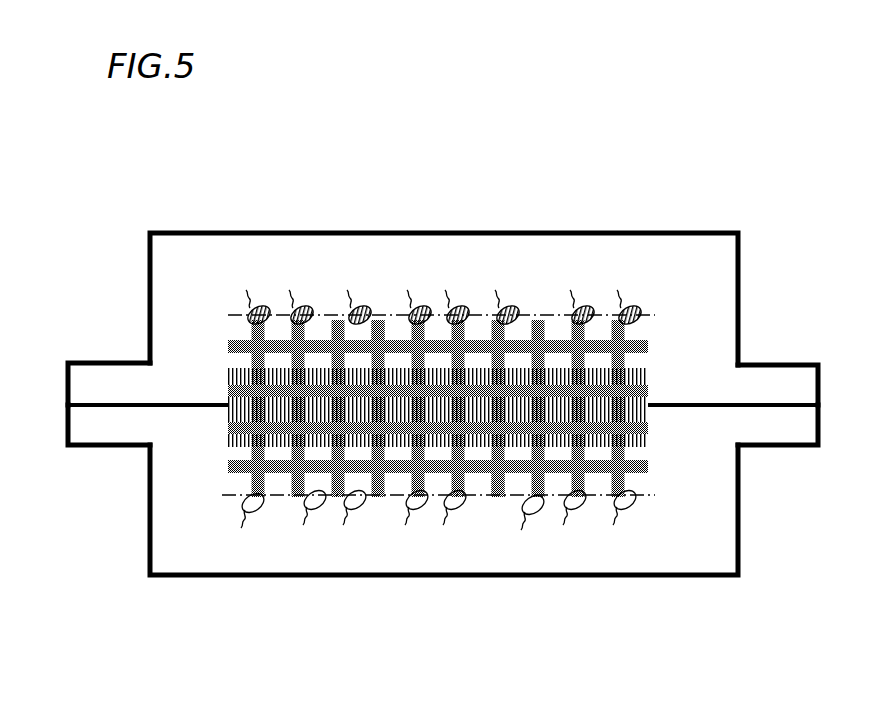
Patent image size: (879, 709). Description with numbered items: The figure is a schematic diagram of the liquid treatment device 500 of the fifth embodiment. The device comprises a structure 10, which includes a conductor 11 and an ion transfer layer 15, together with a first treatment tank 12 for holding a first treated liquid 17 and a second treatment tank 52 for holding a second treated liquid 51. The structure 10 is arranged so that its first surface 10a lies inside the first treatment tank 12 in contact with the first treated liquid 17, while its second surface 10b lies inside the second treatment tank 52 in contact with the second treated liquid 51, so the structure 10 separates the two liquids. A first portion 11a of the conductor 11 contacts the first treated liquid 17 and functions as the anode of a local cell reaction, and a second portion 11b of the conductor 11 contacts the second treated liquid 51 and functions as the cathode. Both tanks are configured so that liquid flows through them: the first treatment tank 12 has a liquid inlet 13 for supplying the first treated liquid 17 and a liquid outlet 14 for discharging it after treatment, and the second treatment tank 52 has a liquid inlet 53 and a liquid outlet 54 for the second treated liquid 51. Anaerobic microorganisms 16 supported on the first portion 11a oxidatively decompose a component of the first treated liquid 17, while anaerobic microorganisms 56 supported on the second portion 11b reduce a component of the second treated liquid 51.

The liquid treatment device 500 is at (712, 187).
The second treatment tank 52 is at (350, 231).
The first treatment tank 12 is at (617, 577).
The liquid inlet 53 is at (118, 377).
The liquid inlet 13 is at (112, 437).
The liquid outlet 54 is at (778, 376).
The liquid outlet 14 is at (775, 445).
The second treated liquid 51 is at (665, 281).
The first treated liquid 17 is at (662, 553).
The structure 10 is at (438, 315).
The conductor 11 is at (475, 348).
The ion transfer layer 15 is at (520, 372).
The second surface 10b is at (268, 313).
The first surface 10a is at (282, 497).
The second portion 11b is at (375, 315).
The first portion 11a is at (500, 497).
The anaerobic microorganisms 56 is at (422, 312).
The anaerobic microorganisms 16 is at (355, 508).